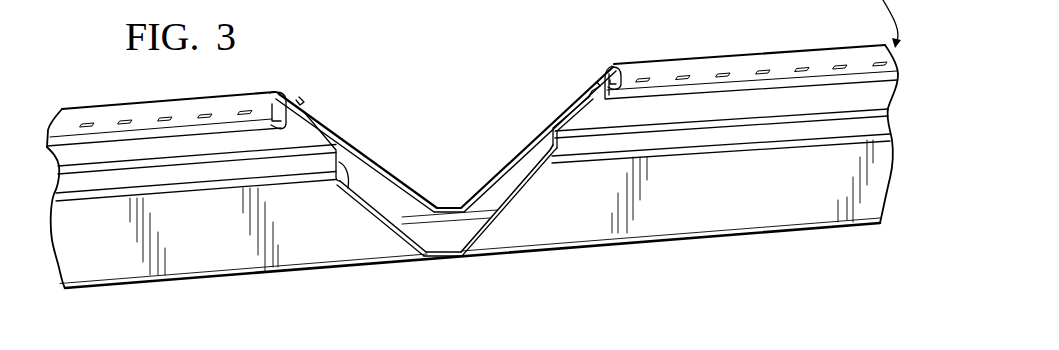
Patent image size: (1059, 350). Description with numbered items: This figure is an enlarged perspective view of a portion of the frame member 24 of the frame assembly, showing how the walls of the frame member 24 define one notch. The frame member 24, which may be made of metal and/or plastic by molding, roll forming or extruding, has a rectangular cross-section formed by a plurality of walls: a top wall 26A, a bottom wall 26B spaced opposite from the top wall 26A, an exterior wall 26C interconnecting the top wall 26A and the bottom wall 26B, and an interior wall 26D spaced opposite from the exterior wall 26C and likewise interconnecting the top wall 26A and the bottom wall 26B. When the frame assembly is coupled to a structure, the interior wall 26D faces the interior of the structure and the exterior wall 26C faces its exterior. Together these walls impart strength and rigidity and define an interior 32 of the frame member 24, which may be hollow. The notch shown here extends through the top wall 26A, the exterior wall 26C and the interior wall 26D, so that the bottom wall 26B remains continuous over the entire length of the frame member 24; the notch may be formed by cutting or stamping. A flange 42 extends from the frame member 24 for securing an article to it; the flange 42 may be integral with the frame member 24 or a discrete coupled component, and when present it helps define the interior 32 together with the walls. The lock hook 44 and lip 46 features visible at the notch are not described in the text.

The frame member 24 is at (753, 207).
The top wall 26A is at (352, 193).
The bottom wall 26B is at (442, 231).
The exterior wall 26C is at (371, 162).
The interior wall 26D is at (398, 233).
The interior 32 is at (392, 200).
The flange 42 is at (71, 86).
The lock hook 44 is at (333, 125).
The lip 46 is at (316, 122).